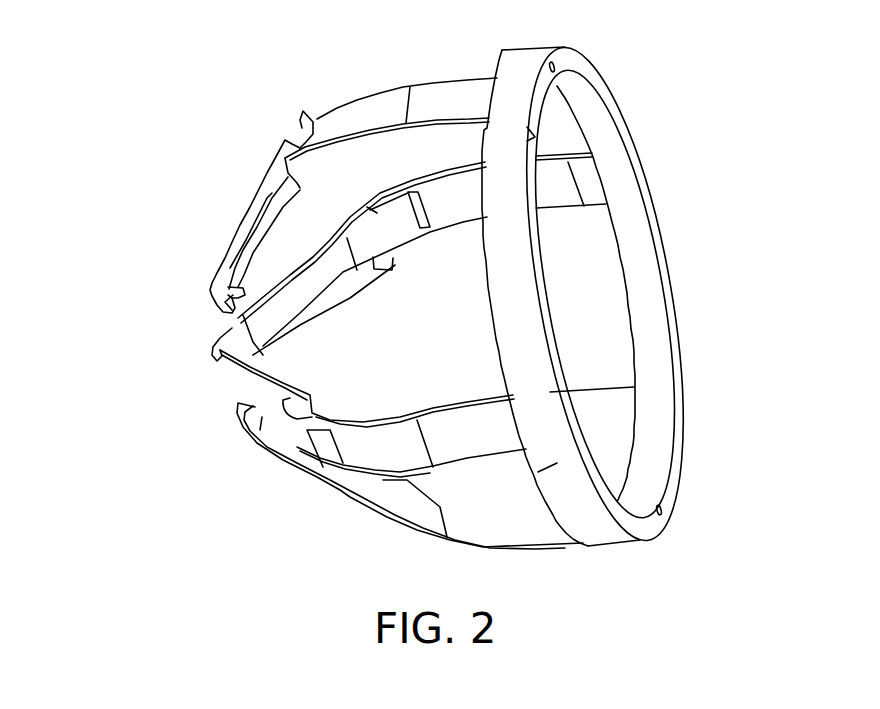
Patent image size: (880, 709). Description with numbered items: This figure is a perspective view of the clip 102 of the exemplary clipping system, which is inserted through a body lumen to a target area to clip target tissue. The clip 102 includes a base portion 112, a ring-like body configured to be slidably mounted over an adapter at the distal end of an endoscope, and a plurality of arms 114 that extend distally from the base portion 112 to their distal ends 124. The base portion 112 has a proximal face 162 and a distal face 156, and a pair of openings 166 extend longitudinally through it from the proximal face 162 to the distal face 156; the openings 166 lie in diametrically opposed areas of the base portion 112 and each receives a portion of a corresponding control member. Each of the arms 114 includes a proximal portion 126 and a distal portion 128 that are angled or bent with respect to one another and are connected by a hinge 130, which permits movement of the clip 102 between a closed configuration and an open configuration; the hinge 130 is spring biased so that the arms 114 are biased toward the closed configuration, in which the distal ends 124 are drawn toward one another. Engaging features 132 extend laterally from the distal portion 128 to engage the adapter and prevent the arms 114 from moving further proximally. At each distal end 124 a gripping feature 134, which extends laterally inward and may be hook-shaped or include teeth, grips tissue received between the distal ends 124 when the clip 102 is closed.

The clip 102 is at (170, 137).
The base portion 112 is at (622, 238).
The arms 114 is at (378, 438).
The distal ends 124 is at (226, 299).
The proximal portion 126 is at (422, 100).
The distal portion 128 is at (253, 223).
The hinge 130 is at (308, 123).
The engaging features 132 is at (276, 196).
The gripping feature 134 is at (230, 328).
The distal face 156 is at (542, 472).
The proximal face 162 is at (675, 342).
The openings 166 is at (557, 63).